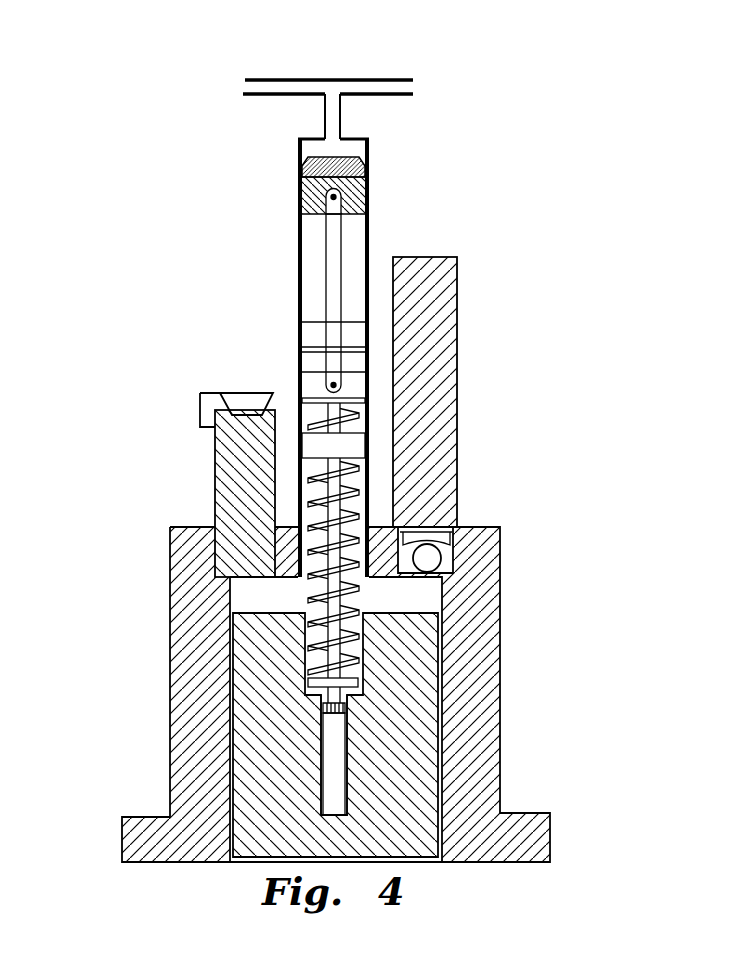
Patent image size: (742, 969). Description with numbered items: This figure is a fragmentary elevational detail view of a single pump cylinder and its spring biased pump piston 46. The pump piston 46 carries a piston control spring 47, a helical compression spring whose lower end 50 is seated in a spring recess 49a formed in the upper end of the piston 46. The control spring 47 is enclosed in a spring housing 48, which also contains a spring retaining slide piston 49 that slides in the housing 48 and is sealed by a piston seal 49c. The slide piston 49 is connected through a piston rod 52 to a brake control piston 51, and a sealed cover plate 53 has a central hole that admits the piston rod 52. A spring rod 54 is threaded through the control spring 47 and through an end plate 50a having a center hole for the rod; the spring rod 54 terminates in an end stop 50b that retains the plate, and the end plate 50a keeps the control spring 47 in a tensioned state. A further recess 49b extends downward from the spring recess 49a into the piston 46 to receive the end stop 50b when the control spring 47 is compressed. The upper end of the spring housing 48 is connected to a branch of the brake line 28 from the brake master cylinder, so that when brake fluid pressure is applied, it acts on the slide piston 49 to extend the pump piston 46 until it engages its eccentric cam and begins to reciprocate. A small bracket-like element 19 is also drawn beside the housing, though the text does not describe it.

The brake line 28 is at (370, 82).
The spring retaining slide piston 49 is at (298, 183).
The piston seal 49c is at (370, 165).
The spring housing 48 is at (370, 233).
The piston rod 52 is at (325, 260).
The sealed cover plate 53 is at (315, 337).
The bracket 19 is at (250, 394).
The brake control piston 51 is at (358, 386).
The piston control spring 47 is at (280, 484).
The spring rod 54 is at (292, 484).
The spring recess 49a is at (372, 612).
The lower end of the control spring 50 is at (305, 658).
The end plate 50a is at (312, 697).
The end stop 50b is at (350, 705).
The recess 49b is at (350, 753).
The pump piston 46 is at (447, 777).